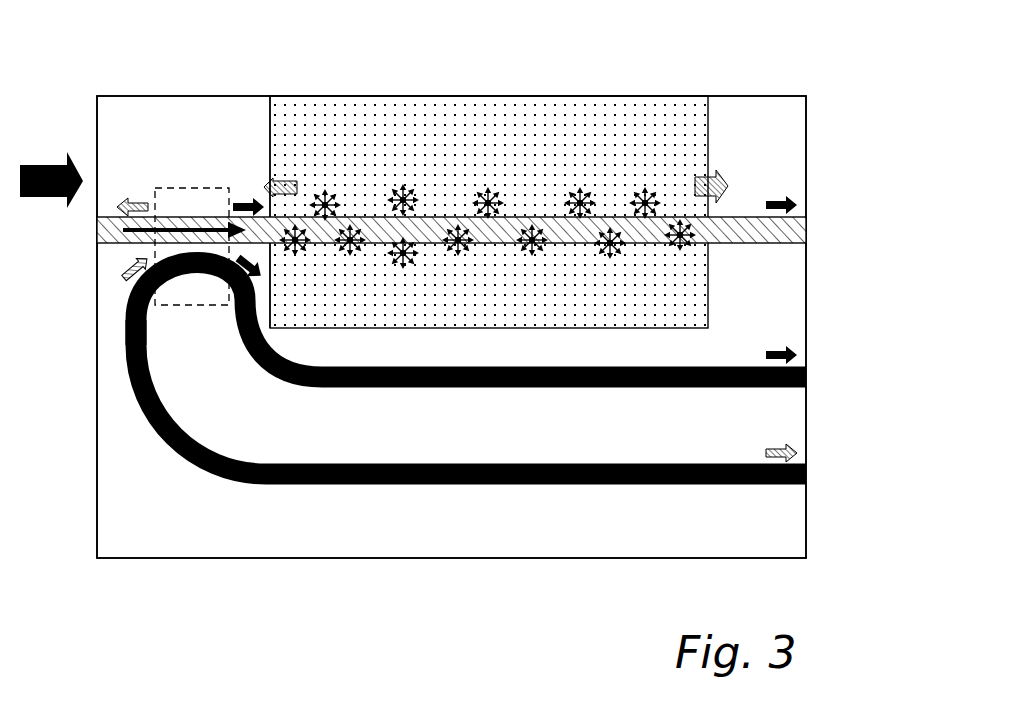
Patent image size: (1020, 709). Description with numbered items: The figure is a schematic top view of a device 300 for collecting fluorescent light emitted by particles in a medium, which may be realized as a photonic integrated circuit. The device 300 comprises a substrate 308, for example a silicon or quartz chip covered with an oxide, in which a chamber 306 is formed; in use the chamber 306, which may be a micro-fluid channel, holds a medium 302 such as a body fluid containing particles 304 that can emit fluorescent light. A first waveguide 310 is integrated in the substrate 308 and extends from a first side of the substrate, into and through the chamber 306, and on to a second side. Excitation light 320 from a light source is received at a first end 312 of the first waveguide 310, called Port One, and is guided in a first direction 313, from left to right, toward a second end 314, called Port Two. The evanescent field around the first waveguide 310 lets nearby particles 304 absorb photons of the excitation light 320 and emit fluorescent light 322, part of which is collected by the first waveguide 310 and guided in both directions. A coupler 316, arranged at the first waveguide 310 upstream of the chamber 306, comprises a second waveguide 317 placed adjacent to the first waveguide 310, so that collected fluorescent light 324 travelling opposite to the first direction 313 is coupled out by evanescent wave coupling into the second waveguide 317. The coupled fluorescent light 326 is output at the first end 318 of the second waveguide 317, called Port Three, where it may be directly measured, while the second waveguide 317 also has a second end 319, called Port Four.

The device for collecting fluorescent light 300 is at (812, 68).
The medium 302 is at (572, 108).
The particles 304 is at (583, 200).
The chamber 306 is at (274, 138).
The substrate 308 is at (192, 118).
The first waveguide 310 is at (760, 240).
The first end 312 is at (95, 240).
The first direction 313 is at (175, 228).
The second end 314 is at (806, 243).
The coupler 316 is at (180, 305).
The second waveguide 317 is at (275, 462).
The first end 318 is at (806, 485).
The second end 319 is at (806, 385).
The excitation light 320 is at (52, 162).
The fluorescent light 322 is at (402, 180).
The collected fluorescent light 324 is at (265, 186).
The fluorescent light 326 is at (128, 277).